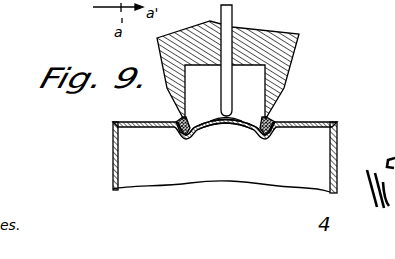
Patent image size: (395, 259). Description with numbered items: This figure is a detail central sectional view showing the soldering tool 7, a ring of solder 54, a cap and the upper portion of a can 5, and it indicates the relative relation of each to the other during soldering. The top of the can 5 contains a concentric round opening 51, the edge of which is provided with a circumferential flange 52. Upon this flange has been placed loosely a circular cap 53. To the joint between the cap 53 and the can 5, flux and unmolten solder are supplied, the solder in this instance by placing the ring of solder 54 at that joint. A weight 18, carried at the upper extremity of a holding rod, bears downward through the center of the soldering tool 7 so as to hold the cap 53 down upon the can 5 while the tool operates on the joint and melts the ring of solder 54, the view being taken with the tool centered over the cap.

The can 5 is at (338, 158).
The die body 7 is at (287, 42).
The weight 18 is at (232, 15).
The round opening 51 is at (261, 137).
The circumferential flange 52 is at (266, 130).
The circular cap 53 is at (244, 118).
The ring of solder 54 is at (272, 124).